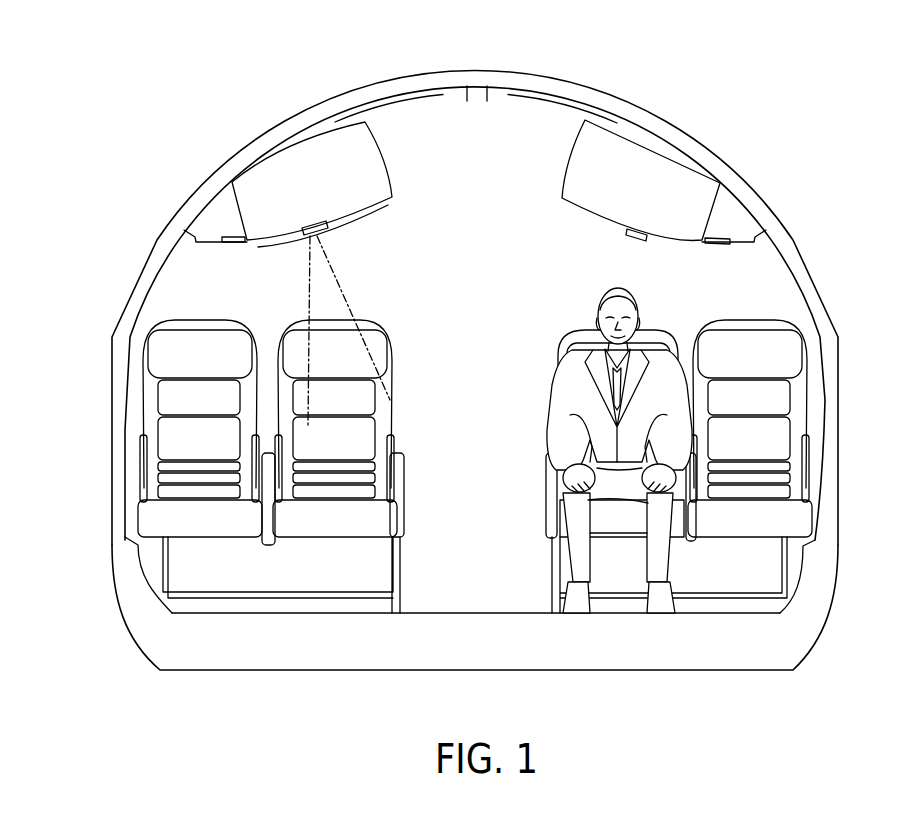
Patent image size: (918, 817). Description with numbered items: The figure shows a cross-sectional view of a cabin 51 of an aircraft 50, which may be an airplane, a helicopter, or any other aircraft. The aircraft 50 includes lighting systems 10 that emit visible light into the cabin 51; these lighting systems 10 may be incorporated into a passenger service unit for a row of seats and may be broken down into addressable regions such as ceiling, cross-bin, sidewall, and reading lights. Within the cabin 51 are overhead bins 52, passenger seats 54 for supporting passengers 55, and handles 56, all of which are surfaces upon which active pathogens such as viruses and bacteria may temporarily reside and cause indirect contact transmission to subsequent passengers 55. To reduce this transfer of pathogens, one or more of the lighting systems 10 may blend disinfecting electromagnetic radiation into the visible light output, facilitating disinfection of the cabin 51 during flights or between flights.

The aircraft 50 is at (127, 83).
The lighting system 10 is at (460, 102).
The overhead bin 52 is at (265, 203).
The passenger seat 54 is at (360, 400).
The passenger 55 is at (697, 297).
The cabin 51 is at (498, 517).
The handle 56 is at (408, 467).